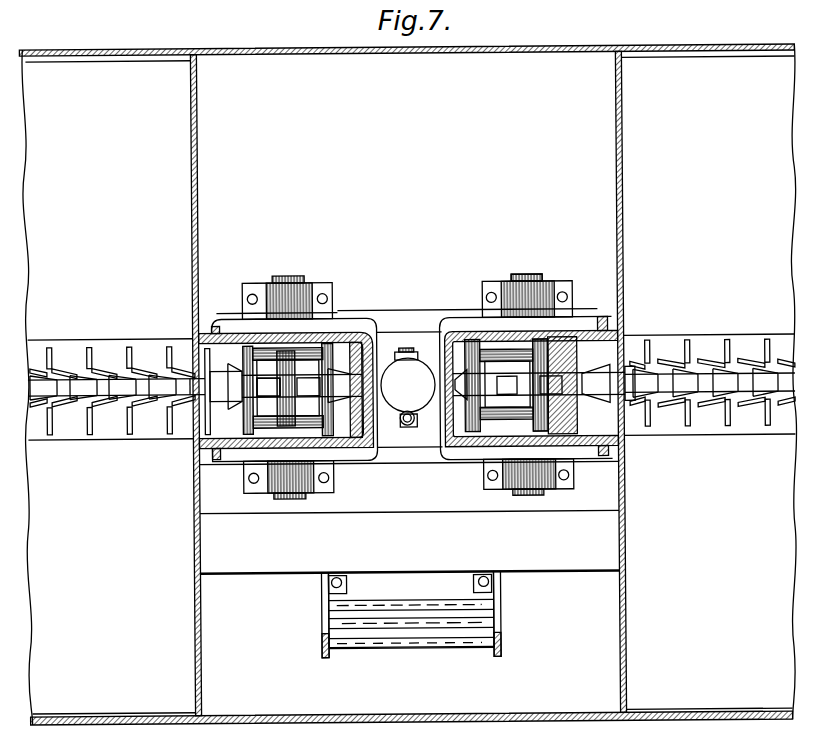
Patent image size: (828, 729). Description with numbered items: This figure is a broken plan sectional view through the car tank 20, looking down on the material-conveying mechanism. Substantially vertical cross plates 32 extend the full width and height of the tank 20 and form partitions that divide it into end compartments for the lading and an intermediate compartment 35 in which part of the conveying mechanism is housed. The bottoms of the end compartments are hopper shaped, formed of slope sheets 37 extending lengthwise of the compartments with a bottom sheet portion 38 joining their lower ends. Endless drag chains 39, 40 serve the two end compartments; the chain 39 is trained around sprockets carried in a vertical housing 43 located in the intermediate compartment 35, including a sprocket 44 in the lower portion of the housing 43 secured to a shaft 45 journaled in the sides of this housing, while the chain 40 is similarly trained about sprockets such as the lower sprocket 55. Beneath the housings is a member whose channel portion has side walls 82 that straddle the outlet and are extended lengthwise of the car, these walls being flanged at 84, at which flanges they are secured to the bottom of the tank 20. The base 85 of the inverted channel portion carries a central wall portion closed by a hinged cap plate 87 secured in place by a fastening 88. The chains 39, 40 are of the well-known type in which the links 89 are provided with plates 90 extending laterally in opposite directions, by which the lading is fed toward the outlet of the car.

The tank 20 is at (247, 53).
The cross plates 32 is at (200, 185).
The intermediate compartment 35 is at (362, 328).
The slope sheets 37 is at (107, 83).
The bottom sheet portion 38 is at (668, 422).
The drag chain 39 is at (713, 404).
The drag chain 40 is at (70, 410).
The vertical housing 43 is at (443, 330).
The sprocket 44 is at (535, 370).
The shaft 45 is at (528, 272).
The sprocket 55 is at (285, 380).
The side walls 82 is at (392, 342).
The flanges 84 is at (425, 312).
The base 85 is at (420, 430).
The cap plate 87 is at (408, 380).
The fastening 88 is at (398, 427).
The links 89 is at (107, 405).
The plates 90 is at (128, 346).